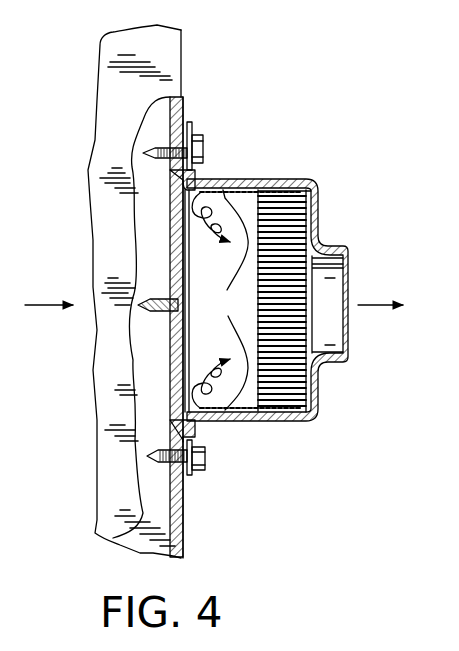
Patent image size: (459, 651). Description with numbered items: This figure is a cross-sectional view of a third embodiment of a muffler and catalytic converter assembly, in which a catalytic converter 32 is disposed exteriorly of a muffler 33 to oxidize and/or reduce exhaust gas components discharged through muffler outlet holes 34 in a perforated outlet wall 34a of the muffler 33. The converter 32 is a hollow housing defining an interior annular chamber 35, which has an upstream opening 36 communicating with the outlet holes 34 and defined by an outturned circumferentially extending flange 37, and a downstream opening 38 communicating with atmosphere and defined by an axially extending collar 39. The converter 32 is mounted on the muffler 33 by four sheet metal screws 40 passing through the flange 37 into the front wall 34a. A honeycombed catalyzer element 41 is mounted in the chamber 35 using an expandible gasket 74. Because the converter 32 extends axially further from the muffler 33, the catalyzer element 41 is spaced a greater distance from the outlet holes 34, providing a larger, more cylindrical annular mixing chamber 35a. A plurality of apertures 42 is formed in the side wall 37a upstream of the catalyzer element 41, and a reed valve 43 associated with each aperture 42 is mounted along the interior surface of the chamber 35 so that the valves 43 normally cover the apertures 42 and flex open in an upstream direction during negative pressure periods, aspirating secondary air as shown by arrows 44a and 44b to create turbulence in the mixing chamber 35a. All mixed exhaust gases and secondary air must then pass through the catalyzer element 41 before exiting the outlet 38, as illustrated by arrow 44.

The catalytic converter 32 is at (368, 164).
The muffler 33 is at (118, 42).
The muffler outlet holes 34 is at (180, 226).
The perforated outlet wall 34a is at (180, 358).
The interior annular chamber 35 is at (300, 216).
The annular mixing chamber 35a is at (258, 251).
The upstream opening 36 is at (180, 413).
The outturned circumferentially extending flange 37 is at (189, 122).
The side wall 37a is at (309, 180).
The downstream opening 38 is at (345, 362).
The axially extending collar 39 is at (344, 365).
The sheet metal screws 40 is at (229, 170).
The honeycombed catalyzer element 41 is at (290, 303).
The apertures 42 is at (215, 178).
The reed valves 43 is at (227, 300).
The arrow 44 is at (373, 306).
The arrow 44a is at (180, 196).
The arrow 44b is at (180, 374).
The expandible gasket 74 is at (296, 422).